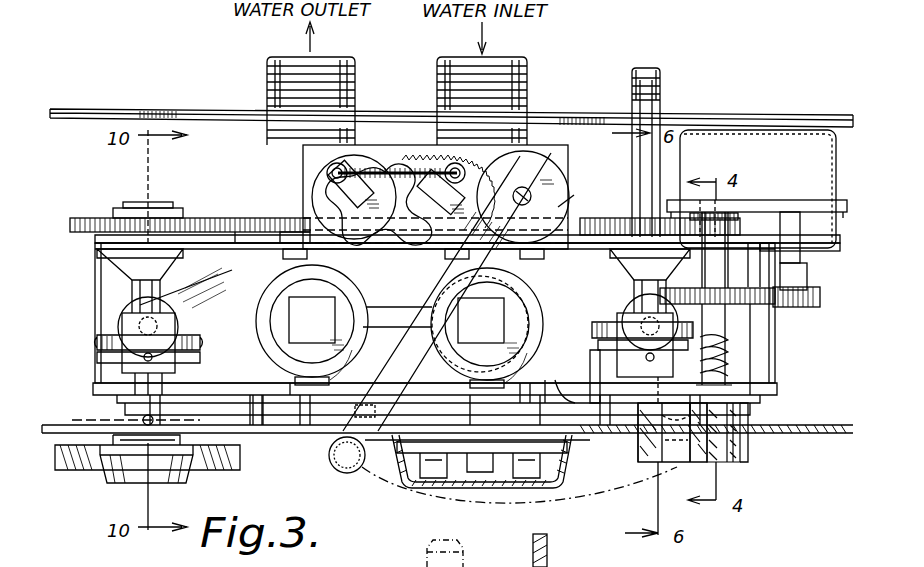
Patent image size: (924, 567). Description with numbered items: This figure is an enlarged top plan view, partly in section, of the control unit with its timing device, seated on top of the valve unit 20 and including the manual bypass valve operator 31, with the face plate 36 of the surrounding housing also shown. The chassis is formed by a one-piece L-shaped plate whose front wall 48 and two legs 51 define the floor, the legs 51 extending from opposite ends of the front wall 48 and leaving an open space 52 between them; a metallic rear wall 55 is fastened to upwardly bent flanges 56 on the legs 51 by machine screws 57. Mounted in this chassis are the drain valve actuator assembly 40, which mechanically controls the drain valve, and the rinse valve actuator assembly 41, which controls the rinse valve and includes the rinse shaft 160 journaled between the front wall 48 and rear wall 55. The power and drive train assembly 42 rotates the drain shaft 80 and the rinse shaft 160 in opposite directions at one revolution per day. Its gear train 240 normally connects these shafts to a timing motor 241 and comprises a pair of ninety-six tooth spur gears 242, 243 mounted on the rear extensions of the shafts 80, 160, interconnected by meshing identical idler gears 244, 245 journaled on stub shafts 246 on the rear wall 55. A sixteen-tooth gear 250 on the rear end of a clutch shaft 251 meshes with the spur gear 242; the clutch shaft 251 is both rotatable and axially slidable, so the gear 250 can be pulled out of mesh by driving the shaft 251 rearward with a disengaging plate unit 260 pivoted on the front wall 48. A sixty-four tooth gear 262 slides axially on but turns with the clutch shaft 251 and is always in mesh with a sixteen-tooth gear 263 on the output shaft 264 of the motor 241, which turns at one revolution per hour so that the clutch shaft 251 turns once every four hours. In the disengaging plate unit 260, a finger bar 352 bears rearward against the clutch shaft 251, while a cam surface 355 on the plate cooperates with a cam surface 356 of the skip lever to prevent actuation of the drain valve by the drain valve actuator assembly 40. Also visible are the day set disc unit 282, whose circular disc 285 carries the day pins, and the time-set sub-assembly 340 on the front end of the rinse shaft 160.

The valve unit 20 is at (422, 291).
The manual bypass valve operator 31 is at (403, 130).
The face plate 36 is at (266, 440).
The drain valve actuator assembly 40 is at (573, 352).
The rinse valve actuator assembly 41 is at (85, 353).
The power and drive train assembly 42 is at (767, 120).
The front wall 48 is at (300, 390).
The legs 51 is at (100, 305).
The open space 52 is at (232, 305).
The rear wall 55 is at (192, 217).
The flanges 56 is at (95, 252).
The machine screws 57 is at (104, 262).
The drain shaft 80 is at (628, 293).
The rinse shaft 160 is at (203, 280).
The gear train 240 is at (697, 155).
The timing motor 241 is at (775, 133).
The spur gear 242 is at (600, 218).
The spur gear 243 is at (88, 217).
The idler gear 244 is at (243, 218).
The idler gear 245 is at (560, 205).
The stub shafts 246 is at (276, 188).
The gear 250 is at (732, 215).
The clutch shaft 251 is at (742, 437).
The disengaging plate unit 260 is at (752, 462).
The gear 262 is at (742, 306).
The gear 263 is at (810, 307).
The output shaft 264 is at (800, 278).
The day set disc unit 282 is at (458, 502).
The circular disc 285 is at (420, 450).
The time-set sub-assembly 340 is at (104, 492).
The finger bar 352 is at (696, 455).
The cam surface 355 is at (668, 440).
The cam surface 356 is at (648, 425).